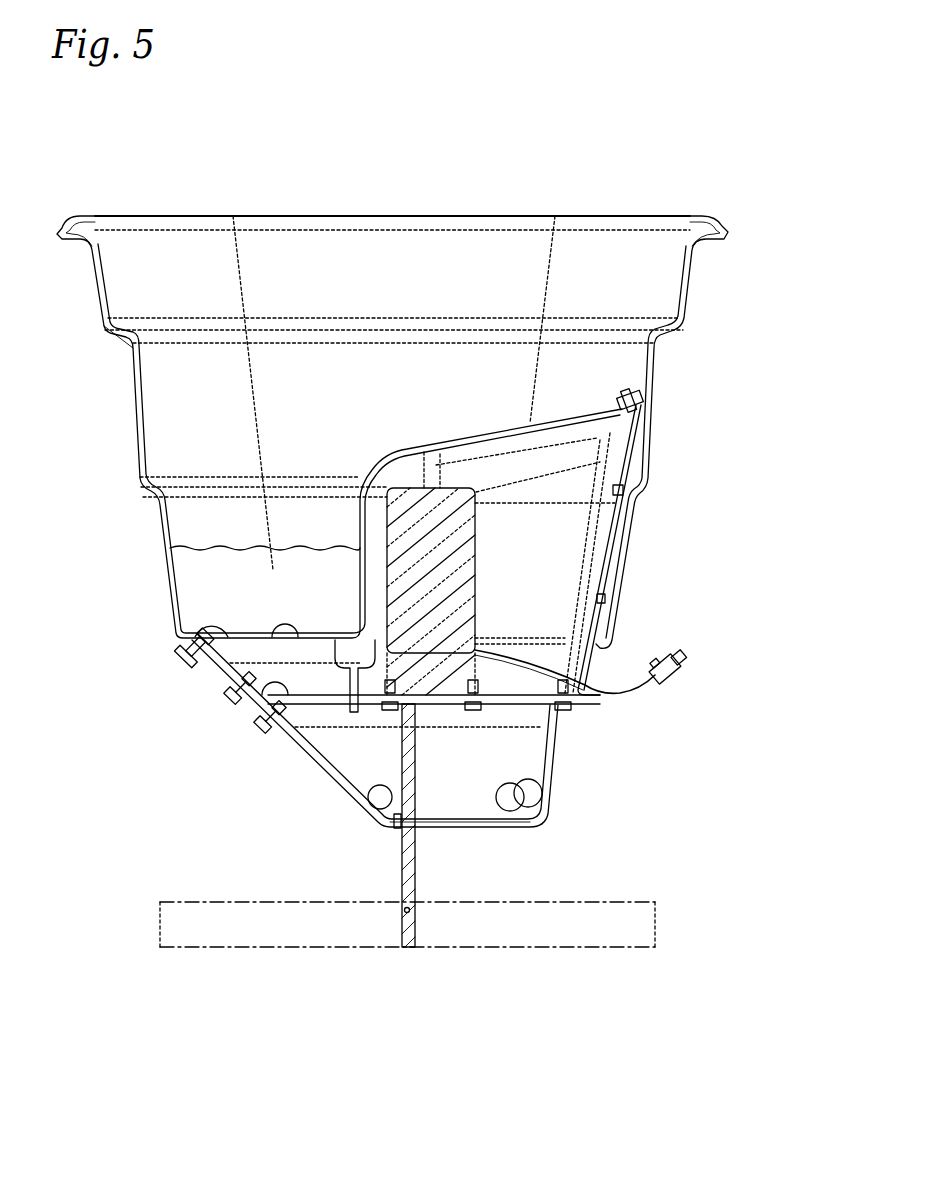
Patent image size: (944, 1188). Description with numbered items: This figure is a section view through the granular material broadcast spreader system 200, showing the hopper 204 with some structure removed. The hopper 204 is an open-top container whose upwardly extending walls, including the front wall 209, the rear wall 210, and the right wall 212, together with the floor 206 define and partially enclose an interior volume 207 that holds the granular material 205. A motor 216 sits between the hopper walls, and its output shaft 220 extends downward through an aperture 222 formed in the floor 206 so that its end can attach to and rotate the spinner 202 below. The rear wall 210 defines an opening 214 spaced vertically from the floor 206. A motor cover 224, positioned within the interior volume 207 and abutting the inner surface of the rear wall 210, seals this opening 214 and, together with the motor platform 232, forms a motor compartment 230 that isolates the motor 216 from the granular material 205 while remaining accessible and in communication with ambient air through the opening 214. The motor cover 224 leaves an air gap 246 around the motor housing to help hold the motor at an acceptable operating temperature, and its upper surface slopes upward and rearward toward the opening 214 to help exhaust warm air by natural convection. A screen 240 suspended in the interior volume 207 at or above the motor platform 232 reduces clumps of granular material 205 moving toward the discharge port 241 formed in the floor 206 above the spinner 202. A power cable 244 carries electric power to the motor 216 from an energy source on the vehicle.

The granular material broadcast spreader system 200 is at (490, 212).
The spinner 202 is at (178, 948).
The hopper 204 is at (103, 213).
The granular material 205 is at (198, 547).
The floor 206 is at (443, 805).
The interior volume 207 is at (408, 360).
The front wall 209 is at (143, 418).
The rear wall 210 is at (680, 268).
The right wall 212 is at (312, 262).
The opening 214 is at (593, 560).
The motor 216 is at (476, 553).
The output shaft 220 is at (400, 893).
The aperture 222 is at (397, 828).
The motor cover 224 is at (563, 420).
The motor compartment 230 is at (547, 608).
The motor platform 232 is at (515, 703).
The screen 240 is at (225, 633).
The discharge port 241 is at (472, 822).
The power cable 244 is at (633, 695).
The air gap 246 is at (377, 537).